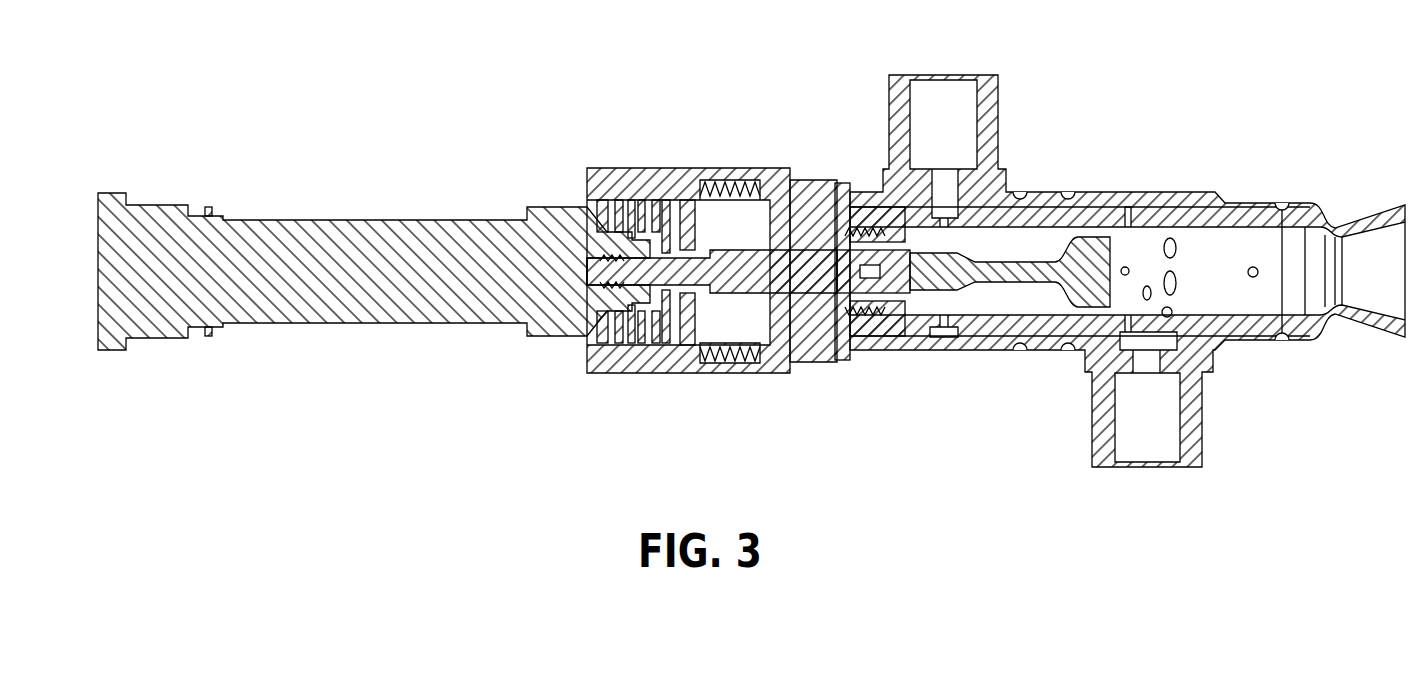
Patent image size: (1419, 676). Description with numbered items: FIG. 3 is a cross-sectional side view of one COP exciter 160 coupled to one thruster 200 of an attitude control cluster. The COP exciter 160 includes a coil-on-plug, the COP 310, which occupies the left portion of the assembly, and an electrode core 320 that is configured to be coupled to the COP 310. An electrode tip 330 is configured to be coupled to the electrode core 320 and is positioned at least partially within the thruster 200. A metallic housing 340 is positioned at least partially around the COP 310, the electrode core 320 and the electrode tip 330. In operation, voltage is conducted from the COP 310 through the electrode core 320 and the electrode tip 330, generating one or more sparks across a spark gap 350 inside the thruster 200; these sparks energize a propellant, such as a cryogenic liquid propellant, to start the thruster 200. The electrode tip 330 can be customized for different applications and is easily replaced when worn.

The COP exciter 160 is at (486, 76).
The thruster 200 is at (1250, 96).
The coil-on-plug 310 is at (368, 328).
The electrode core 320 is at (720, 300).
The electrode tip 330 is at (1028, 283).
The housing 340 is at (659, 168).
The spark gap 350 is at (1124, 241).